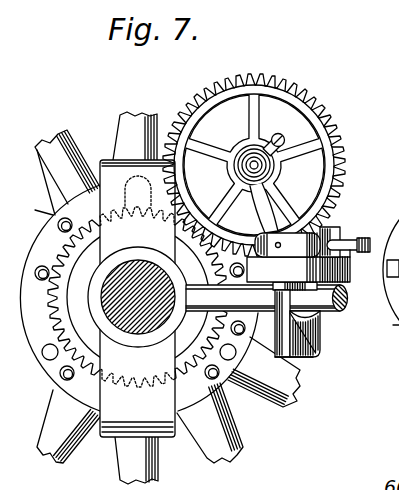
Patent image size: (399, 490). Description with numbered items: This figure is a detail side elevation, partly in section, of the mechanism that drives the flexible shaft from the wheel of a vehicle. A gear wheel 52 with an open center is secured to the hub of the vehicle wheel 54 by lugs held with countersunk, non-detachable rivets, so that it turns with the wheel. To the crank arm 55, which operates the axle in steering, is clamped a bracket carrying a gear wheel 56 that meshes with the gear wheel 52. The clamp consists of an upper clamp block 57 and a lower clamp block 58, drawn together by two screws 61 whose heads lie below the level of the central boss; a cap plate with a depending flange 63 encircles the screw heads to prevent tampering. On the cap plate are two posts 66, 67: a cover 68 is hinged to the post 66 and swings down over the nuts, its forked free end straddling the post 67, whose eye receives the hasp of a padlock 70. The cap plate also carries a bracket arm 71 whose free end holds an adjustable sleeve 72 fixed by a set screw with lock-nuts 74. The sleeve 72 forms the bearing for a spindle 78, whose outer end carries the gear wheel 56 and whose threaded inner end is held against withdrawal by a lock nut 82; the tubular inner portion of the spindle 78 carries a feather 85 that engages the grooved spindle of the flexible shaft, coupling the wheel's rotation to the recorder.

The gear wheel 52 is at (398, 298).
The wheel 54 is at (42, 382).
The crank arm 55 is at (263, 296).
The gear wheel 56 is at (344, 146).
The upper clamp block 57 is at (281, 289).
The lower clamp block 58 is at (315, 331).
The screws 61 is at (315, 357).
The depending flange 63 is at (349, 271).
The post 66 is at (298, 269).
The post 67 is at (336, 233).
The cover 68 is at (287, 246).
The padlock 70 is at (358, 243).
The bracket arm 71 is at (260, 144).
The sleeve 72 is at (249, 154).
The lock-nuts 74 is at (274, 148).
The spindle 78 is at (259, 162).
The lock nut 82 is at (259, 186).
The feather 85 is at (243, 164).